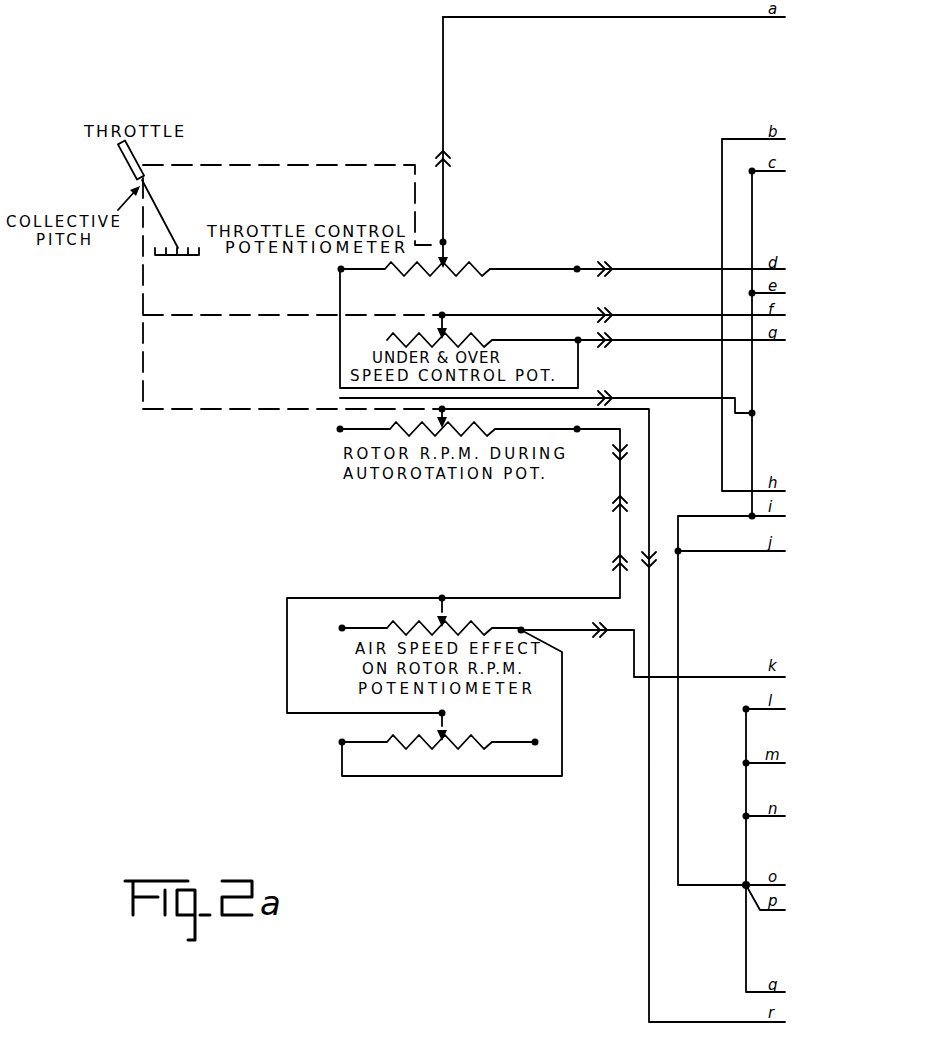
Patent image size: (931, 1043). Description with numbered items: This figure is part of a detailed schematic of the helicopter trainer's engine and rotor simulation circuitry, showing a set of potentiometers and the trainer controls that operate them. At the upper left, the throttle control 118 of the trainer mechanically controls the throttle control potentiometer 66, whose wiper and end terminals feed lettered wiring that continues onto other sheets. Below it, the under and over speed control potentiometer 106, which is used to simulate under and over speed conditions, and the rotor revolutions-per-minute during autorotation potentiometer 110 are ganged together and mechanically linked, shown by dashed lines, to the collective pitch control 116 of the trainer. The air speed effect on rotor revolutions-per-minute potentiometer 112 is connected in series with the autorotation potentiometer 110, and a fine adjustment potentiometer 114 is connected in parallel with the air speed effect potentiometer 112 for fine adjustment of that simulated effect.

The throttle control 118 is at (121, 163).
The collective pitch control 116 is at (140, 202).
The throttle control potentiometer 66 is at (460, 260).
The under and over speed control potentiometer 106 is at (375, 328).
The rotor revolutions-per-minute during autorotation potentiometer 110 is at (360, 434).
The air speed effect on rotor revolutions-per-minute potentiometer 112 is at (340, 650).
The fine adjustment potentiometer 114 is at (430, 745).